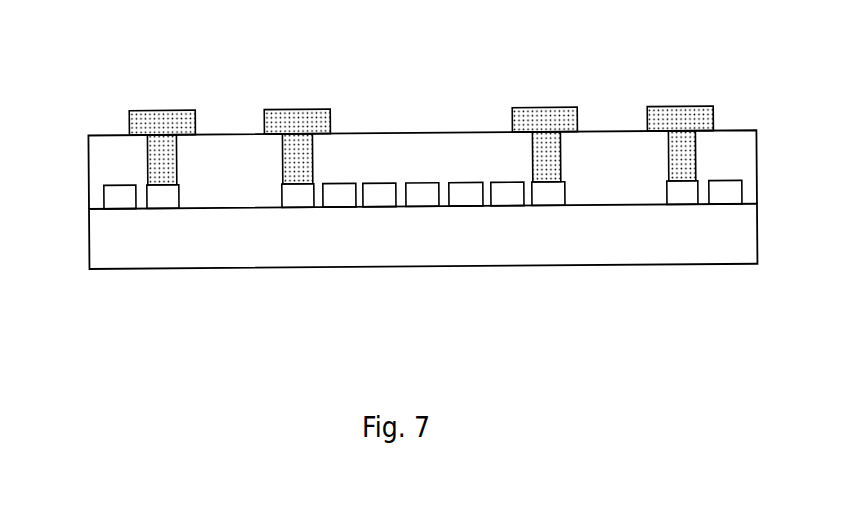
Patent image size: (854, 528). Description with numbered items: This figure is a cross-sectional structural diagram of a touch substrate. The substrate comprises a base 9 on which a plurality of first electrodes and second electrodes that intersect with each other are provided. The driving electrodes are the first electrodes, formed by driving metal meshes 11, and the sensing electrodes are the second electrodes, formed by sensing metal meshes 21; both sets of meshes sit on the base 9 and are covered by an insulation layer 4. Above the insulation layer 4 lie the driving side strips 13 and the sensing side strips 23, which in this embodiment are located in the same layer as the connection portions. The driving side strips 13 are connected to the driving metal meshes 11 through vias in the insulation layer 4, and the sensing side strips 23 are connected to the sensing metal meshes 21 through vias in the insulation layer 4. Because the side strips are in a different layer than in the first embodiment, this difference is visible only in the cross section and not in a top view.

The insulation layer 4 is at (105, 164).
The base 9 is at (103, 243).
The driving metal meshes 11 is at (163, 202).
The driving side strip 13 is at (157, 118).
The sensing metal meshes 21 is at (547, 197).
The sensing side strip 23 is at (300, 118).